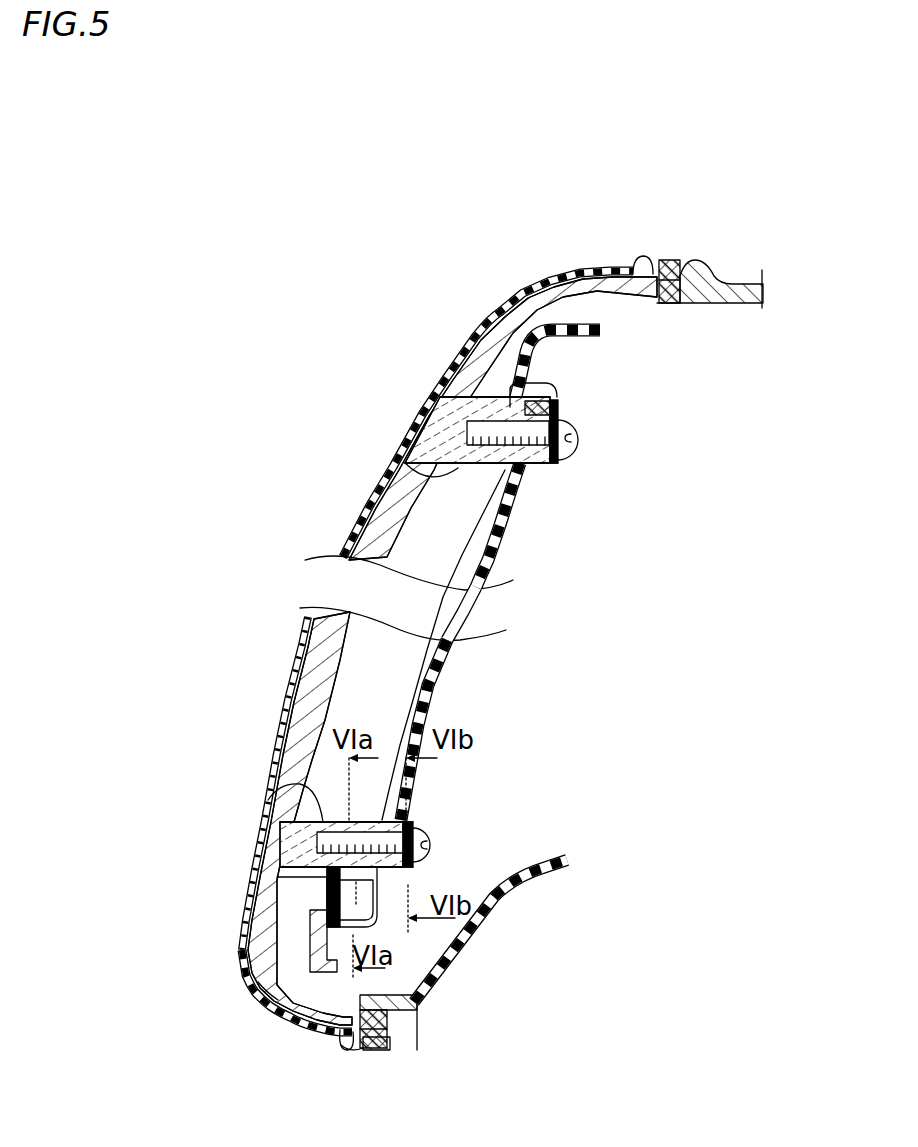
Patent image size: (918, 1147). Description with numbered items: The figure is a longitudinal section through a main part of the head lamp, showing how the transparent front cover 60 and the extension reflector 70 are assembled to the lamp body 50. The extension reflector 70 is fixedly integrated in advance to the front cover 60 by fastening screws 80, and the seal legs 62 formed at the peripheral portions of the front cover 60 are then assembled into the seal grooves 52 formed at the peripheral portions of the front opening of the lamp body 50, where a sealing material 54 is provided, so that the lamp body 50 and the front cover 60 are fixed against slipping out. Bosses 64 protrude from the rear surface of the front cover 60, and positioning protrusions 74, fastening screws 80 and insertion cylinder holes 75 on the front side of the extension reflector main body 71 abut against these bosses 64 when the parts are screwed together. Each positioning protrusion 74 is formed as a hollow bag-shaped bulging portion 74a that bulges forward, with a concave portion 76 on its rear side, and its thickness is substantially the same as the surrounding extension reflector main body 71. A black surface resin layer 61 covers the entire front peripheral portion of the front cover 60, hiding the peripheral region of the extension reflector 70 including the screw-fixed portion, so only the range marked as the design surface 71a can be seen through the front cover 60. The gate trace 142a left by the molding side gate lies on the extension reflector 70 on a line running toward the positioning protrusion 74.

The lamp body 50 is at (539, 900).
The seal groove 52 is at (697, 261).
The sealing material 54 is at (410, 1025).
The front cover 60 is at (355, 498).
The black surface resin layer 61 is at (470, 330).
The seal leg 62 is at (665, 259).
The boss 64 is at (405, 475).
The extension reflector 70 is at (478, 538).
The extension reflector main body 71 is at (500, 575).
The design surface 71a is at (434, 621).
The positioning protrusion 74 is at (339, 672).
The bulging portion 74a is at (438, 397).
The insertion cylinder hole 75 is at (566, 432).
The concave portion 76 is at (543, 392).
The fastening screw 80 is at (580, 442).
The gate trace 142a is at (268, 990).